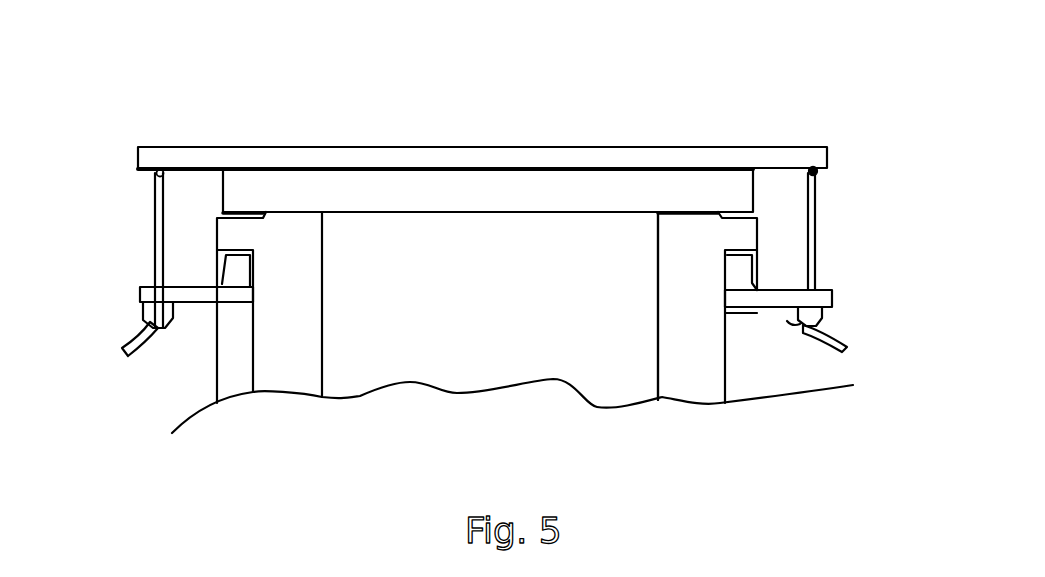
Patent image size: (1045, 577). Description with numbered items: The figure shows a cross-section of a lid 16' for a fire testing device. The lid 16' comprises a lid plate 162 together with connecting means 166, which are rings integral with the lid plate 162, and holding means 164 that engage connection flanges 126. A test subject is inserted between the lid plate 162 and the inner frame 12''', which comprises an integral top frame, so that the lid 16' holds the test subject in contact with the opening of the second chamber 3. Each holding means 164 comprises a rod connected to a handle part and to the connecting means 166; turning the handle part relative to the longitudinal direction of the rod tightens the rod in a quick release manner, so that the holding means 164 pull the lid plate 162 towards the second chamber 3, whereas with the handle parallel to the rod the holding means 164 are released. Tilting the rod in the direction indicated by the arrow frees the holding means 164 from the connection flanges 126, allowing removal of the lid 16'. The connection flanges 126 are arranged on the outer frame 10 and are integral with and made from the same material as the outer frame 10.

The second chamber 3 is at (512, 409).
The outer frame 10 is at (439, 352).
The inner frame 12''' is at (592, 306).
The lid 16' is at (512, 143).
The connection flanges 126 is at (489, 339).
The lid plate 162 is at (482, 119).
The holding means 164 is at (862, 293).
The connecting means 166 is at (487, 239).